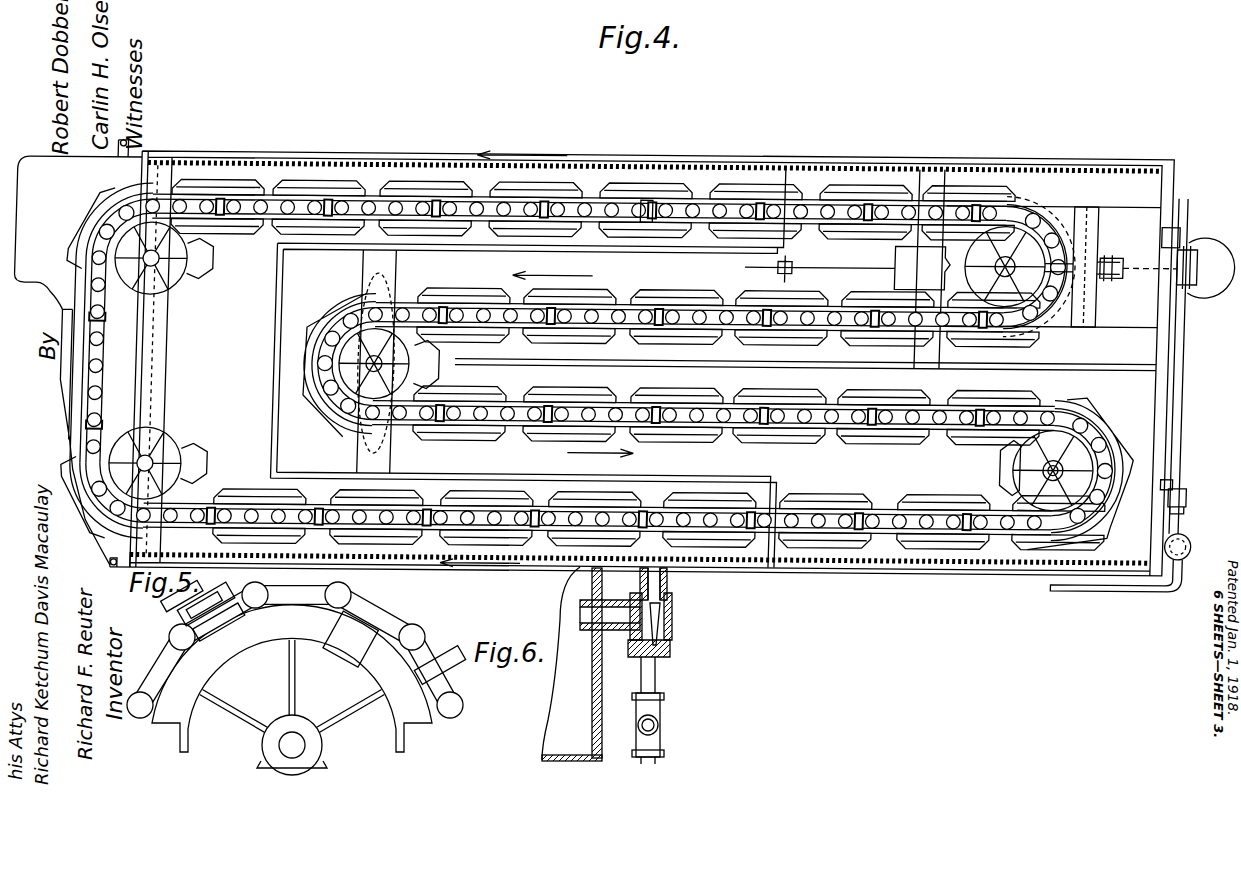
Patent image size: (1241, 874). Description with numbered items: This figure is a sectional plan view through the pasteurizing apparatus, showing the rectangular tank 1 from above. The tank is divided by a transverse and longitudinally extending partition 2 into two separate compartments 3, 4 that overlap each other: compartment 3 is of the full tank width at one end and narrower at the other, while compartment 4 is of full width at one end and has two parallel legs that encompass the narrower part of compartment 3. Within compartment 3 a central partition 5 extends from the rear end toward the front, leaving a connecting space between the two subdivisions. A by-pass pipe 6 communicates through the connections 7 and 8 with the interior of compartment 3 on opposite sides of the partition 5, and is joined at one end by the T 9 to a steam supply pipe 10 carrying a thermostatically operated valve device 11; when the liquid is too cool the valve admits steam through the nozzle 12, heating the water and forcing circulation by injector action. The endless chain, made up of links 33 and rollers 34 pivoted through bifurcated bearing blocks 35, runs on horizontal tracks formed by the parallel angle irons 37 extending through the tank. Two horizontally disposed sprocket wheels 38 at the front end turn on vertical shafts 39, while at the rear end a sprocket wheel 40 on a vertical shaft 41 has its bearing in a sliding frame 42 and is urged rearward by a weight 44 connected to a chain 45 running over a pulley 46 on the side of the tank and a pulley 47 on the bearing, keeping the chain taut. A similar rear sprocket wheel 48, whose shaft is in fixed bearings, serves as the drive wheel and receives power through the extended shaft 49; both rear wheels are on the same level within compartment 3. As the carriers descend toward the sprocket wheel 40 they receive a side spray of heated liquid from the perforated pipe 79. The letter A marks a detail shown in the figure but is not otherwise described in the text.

In FIG. 4, the tank 1 is at (907, 568).
In FIG. 6, the tank 1 is at (600, 737).
In FIG. 4, the partition 2 is at (280, 421).
In FIG. 4, the compartment 3 is at (726, 430).
In FIG. 4, the compartment 4 is at (112, 361).
In FIG. 4, the central partition 5 is at (806, 354).
In FIG. 4, the by-pass pipe 6 is at (1192, 367).
In FIG. 6, the by-pass pipe 6 is at (668, 576).
In FIG. 4, the connection 7 is at (1181, 475).
In FIG. 6, the connection 7 is at (614, 631).
In FIG. 4, the connection 8 is at (1180, 221).
In FIG. 4, the T 9 is at (1199, 491).
In FIG. 6, the T 9 is at (672, 618).
In FIG. 4, the steam supply pipe 10 is at (1104, 584).
In FIG. 6, the steam supply pipe 10 is at (657, 684).
In FIG. 4, the thermostatically operated valve device 11 is at (1201, 530).
In FIG. 6, the thermostatically operated valve device 11 is at (660, 728).
In FIG. 6, the nozzle 12 is at (660, 624).
In FIG. 4, the links 33 is at (796, 204).
In FIG. 5, the links 33 is at (385, 622).
In FIG. 4, the rollers 34 is at (650, 218).
In FIG. 5, the bifurcated bearing block 35 is at (246, 600).
In FIG. 4, the angle irons 37 is at (489, 225).
In FIG. 4, the sprocket wheels 38 is at (216, 256).
In FIG. 5, the sprocket wheels 38 is at (418, 720).
In FIG. 4, the vertical axes or shafts 39 is at (166, 261).
In FIG. 5, the vertical axes or shafts 39 is at (294, 746).
In FIG. 4, the sprocket wheel 40 is at (922, 267).
In FIG. 4, the vertical shaft 41 is at (1012, 253).
In FIG. 4, the sliding frame 42 is at (1100, 244).
In FIG. 4, the weight 44 is at (1206, 239).
In FIG. 4, the chain 45 is at (1152, 262).
In FIG. 4, the pulley 46 is at (1201, 285).
In FIG. 4, the pulley 47 is at (1126, 271).
In FIG. 4, the sprocket wheel 48 is at (1010, 476).
In FIG. 4, the extended shaft 49 is at (1039, 461).
In FIG. 4, the pipe 79 is at (829, 262).
In FIG. 4, the guide hood A is at (514, 367).